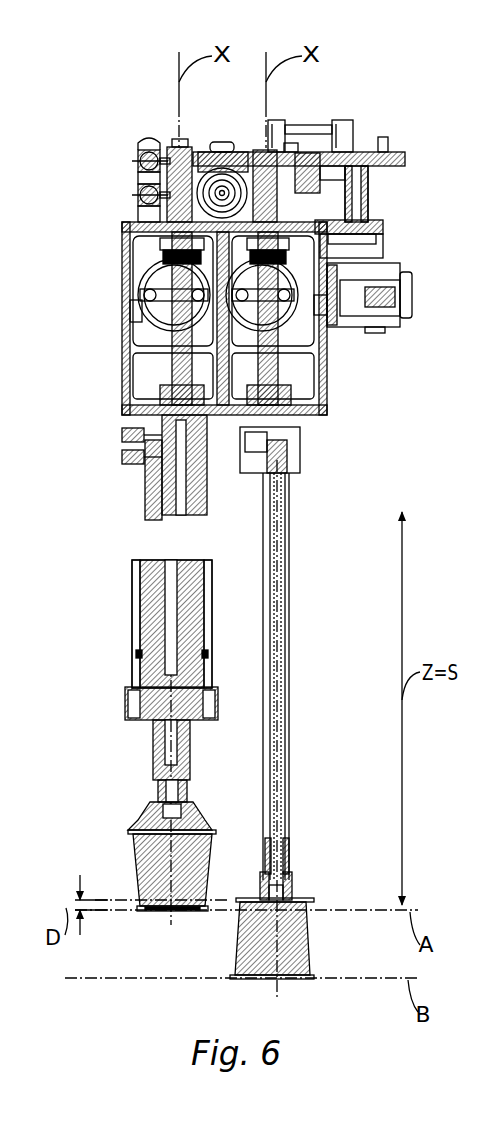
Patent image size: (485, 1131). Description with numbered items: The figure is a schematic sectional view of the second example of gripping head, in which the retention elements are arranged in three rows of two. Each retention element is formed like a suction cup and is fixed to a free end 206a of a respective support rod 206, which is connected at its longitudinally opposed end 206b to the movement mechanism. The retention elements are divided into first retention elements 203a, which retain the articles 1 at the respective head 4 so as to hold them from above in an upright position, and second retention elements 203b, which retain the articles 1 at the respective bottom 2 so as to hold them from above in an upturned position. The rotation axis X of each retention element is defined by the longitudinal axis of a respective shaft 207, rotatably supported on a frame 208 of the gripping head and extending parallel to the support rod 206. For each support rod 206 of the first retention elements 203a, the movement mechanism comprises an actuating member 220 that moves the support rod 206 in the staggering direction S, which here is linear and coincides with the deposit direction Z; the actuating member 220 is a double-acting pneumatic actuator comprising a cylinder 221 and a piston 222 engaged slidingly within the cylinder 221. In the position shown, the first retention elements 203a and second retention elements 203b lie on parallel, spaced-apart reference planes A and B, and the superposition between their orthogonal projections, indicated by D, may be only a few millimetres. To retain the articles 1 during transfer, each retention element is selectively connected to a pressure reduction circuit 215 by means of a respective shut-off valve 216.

The article 1 is at (135, 862).
The bottom 2 is at (155, 912).
The head 4 is at (292, 980).
The first retention element 203a is at (142, 812).
The second retention element 203b is at (262, 888).
The support rod 206 is at (287, 590).
The free end 206a is at (187, 785).
The longitudinally opposed end 206b is at (300, 452).
The shaft 207 is at (190, 378).
The frame 208 is at (125, 300).
The pressure reduction circuit 215 is at (148, 140).
The shut-off valve 216 is at (132, 222).
The actuating member 220 is at (208, 648).
The cylinder 221 is at (135, 645).
The piston 222 is at (153, 612).